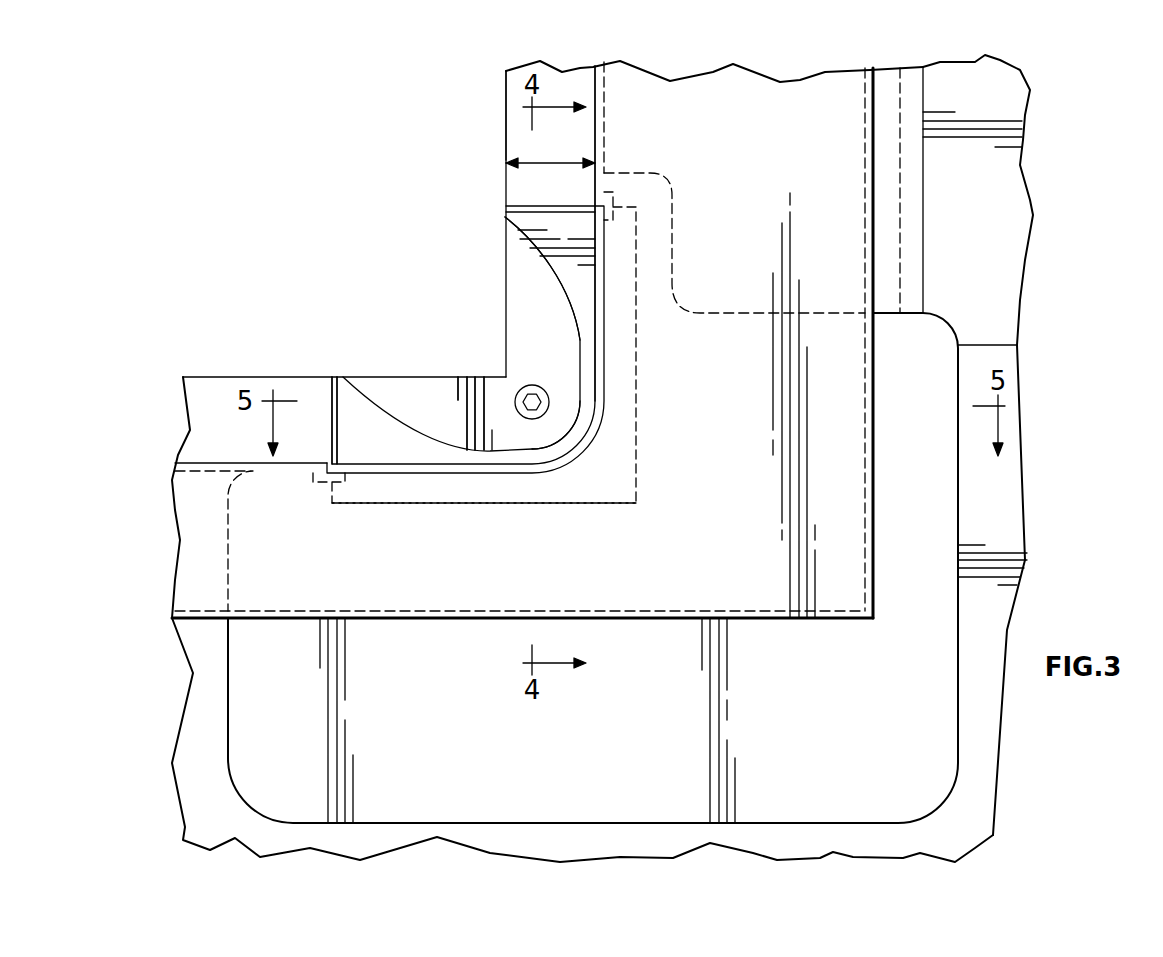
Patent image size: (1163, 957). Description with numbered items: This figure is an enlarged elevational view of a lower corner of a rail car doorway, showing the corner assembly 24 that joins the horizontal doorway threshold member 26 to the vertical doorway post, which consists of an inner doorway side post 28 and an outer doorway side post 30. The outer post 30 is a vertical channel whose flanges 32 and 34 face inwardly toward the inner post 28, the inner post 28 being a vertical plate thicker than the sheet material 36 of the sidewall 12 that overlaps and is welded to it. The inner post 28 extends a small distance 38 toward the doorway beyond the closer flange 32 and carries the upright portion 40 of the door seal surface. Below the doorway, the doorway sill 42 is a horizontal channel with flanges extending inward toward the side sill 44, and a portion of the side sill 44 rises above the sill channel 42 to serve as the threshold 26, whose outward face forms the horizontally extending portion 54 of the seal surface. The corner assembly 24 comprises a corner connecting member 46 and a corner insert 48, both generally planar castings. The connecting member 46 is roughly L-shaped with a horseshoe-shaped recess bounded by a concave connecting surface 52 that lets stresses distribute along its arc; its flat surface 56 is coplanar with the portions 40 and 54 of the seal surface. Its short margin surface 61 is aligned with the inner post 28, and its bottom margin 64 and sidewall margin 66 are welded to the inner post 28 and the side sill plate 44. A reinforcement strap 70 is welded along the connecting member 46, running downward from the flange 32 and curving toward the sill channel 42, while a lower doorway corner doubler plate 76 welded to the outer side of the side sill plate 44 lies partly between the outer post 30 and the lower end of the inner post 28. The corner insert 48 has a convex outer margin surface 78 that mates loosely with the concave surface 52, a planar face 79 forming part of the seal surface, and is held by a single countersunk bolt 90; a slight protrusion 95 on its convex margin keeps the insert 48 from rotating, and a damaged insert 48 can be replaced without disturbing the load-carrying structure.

The sidewall 12 is at (1013, 282).
The corner assembly 24 is at (432, 298).
The horizontal doorway threshold member 26 is at (203, 408).
The inner doorway side post 28 is at (570, 80).
The outer doorway side post 30 is at (770, 92).
The flange 32 is at (606, 118).
The flange 34 is at (862, 153).
The sheet material 36 is at (1012, 162).
The small distance 38 is at (506, 157).
The upright portion of the door seal surface 40 is at (506, 85).
The doorway sill 42 is at (407, 600).
The side sill 44 is at (1000, 750).
The corner connecting member 46 is at (352, 407).
The corner insert 48 is at (506, 333).
The concave connecting surface 52 is at (550, 268).
The horizontally extending portion of the door seal surface 54 is at (222, 376).
The flat surface 56 is at (565, 228).
The short margin surface 61 is at (505, 215).
The bottom margin 64 is at (484, 510).
The sidewall margin 66 is at (637, 373).
The reinforcement strap 70 is at (607, 340).
The lower doorway corner doubler plate 76 is at (672, 245).
The convex outer margin surface 78 is at (432, 452).
The planar face 79 is at (437, 400).
The bolt 90 is at (549, 401).
The slight protrusion 95 is at (553, 425).